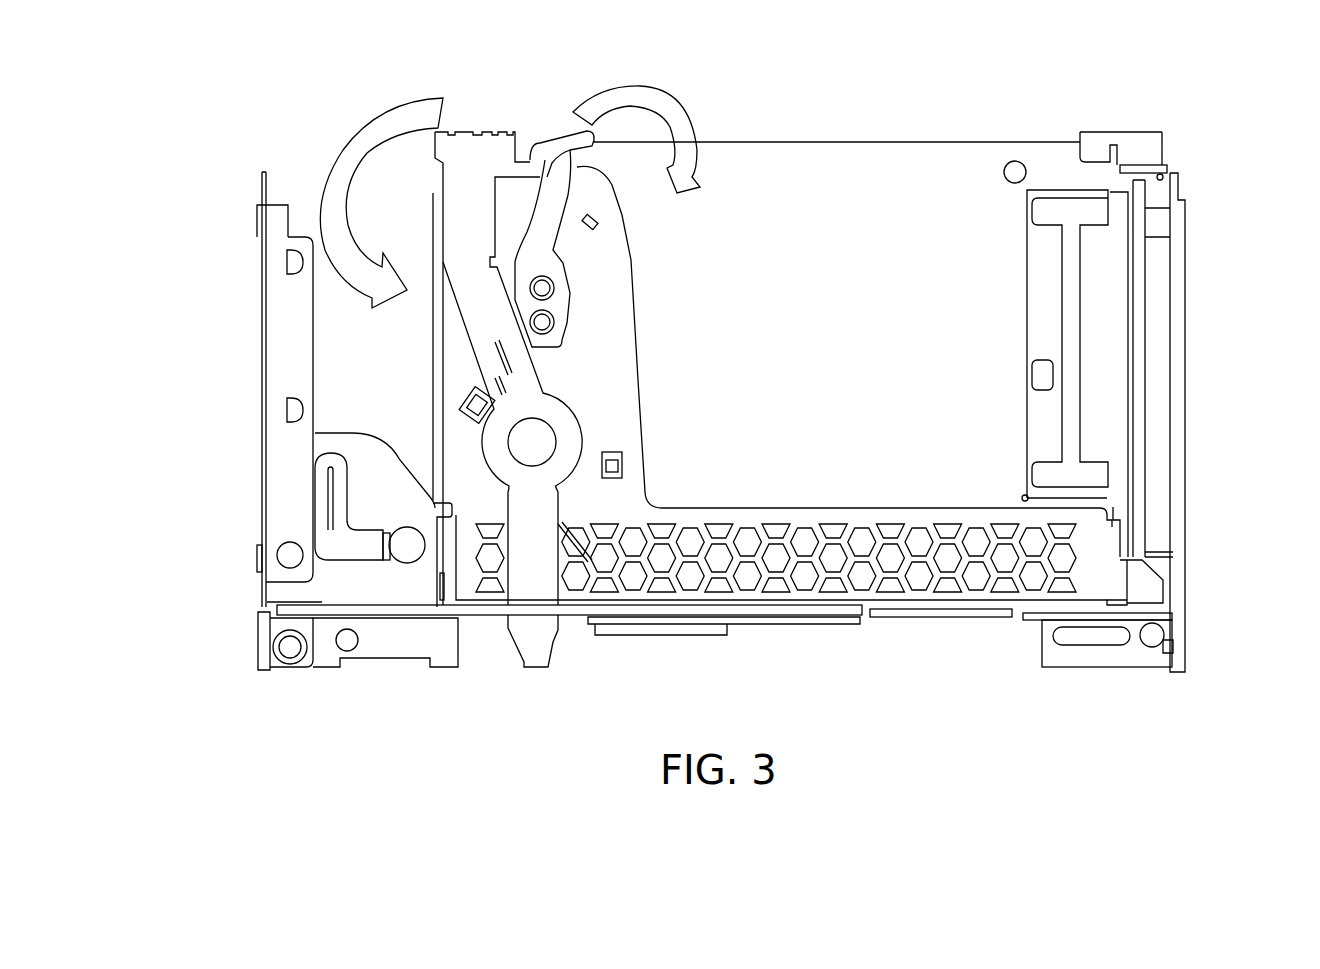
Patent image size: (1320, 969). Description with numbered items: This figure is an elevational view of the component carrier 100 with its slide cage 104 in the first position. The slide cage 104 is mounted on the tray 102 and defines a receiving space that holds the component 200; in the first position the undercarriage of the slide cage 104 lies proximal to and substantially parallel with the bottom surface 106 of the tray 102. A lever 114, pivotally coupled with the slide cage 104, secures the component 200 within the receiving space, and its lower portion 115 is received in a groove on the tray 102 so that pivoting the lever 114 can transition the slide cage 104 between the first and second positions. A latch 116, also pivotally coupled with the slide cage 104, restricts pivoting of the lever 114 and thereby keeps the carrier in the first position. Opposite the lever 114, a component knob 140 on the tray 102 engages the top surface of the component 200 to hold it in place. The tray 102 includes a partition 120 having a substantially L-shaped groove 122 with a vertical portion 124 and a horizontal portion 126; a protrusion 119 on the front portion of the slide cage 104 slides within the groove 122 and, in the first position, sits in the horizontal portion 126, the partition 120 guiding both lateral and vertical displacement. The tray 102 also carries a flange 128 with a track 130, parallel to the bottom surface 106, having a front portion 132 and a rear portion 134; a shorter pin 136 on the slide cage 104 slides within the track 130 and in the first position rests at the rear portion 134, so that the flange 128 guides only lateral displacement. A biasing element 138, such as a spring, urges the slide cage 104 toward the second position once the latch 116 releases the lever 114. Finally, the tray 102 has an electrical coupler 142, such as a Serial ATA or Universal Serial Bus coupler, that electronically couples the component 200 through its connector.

The component carrier 100 is at (834, 62).
The component 200 is at (782, 162).
The tray 102 is at (268, 262).
The slide cage 104 is at (867, 597).
The bottom surface 106 is at (633, 633).
The lever 114 is at (468, 128).
The lower portion 115 is at (540, 657).
The latch 116 is at (557, 128).
The protrusion 119 is at (403, 563).
The partition 120 is at (325, 592).
The groove 122 is at (327, 547).
The vertical portion 124 is at (325, 503).
The horizontal portion 126 is at (357, 560).
The flange 128 is at (1108, 670).
The track 130 is at (1092, 637).
The front portion 132 is at (1053, 653).
The rear portion 134 is at (1135, 637).
The shorter pin 136 is at (1148, 633).
The biasing element 138 is at (327, 477).
The component knob 140 is at (1100, 130).
The electrical coupler 142 is at (1103, 350).